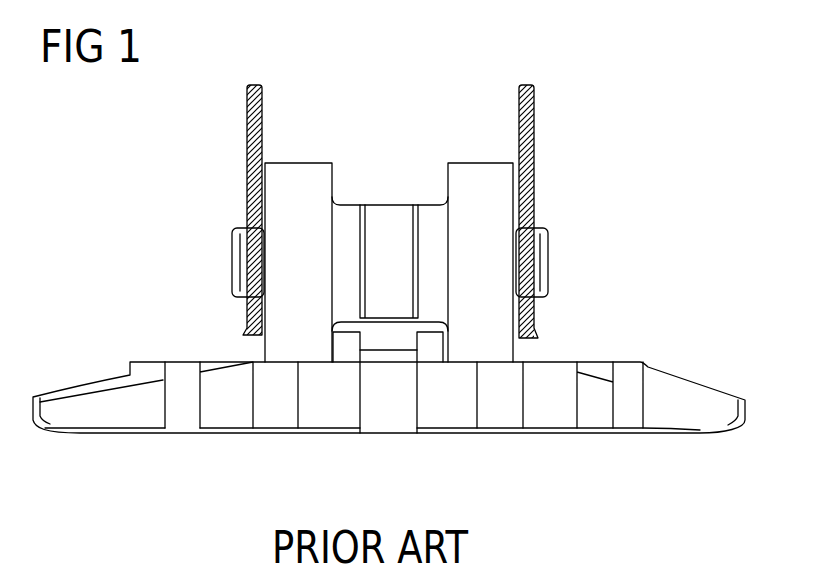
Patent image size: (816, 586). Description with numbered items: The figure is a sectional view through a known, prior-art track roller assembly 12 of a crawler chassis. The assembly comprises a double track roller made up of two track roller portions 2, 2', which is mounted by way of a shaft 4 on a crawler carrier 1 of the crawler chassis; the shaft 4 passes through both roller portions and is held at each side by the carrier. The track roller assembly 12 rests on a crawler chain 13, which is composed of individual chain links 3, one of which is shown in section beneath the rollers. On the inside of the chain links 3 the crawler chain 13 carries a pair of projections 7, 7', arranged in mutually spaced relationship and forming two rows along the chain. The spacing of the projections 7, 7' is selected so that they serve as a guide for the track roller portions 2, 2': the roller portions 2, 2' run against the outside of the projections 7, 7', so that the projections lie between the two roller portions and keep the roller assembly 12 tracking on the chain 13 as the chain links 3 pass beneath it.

The crawler carrier 1 is at (247, 114).
The track roller portion 2 is at (480, 226).
The track roller portion 2' is at (298, 226).
The chain link 3 is at (562, 366).
The shaft 4 is at (241, 258).
The projection 7 is at (433, 376).
The projection 7' is at (320, 371).
The track roller assembly 12 is at (574, 153).
The crawler chain 13 is at (669, 363).